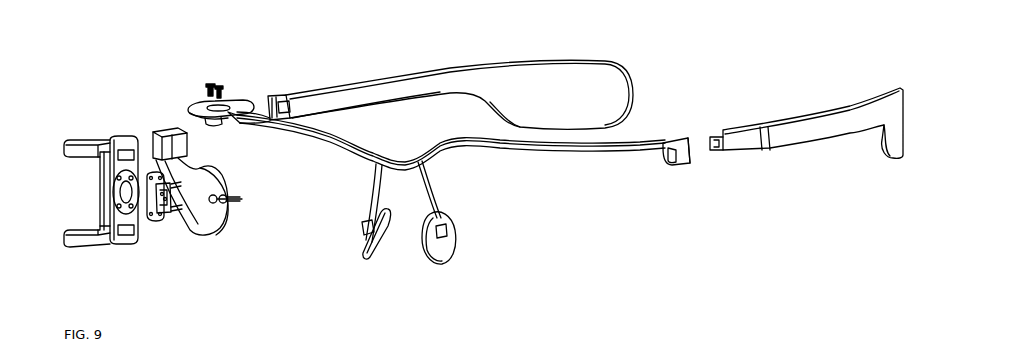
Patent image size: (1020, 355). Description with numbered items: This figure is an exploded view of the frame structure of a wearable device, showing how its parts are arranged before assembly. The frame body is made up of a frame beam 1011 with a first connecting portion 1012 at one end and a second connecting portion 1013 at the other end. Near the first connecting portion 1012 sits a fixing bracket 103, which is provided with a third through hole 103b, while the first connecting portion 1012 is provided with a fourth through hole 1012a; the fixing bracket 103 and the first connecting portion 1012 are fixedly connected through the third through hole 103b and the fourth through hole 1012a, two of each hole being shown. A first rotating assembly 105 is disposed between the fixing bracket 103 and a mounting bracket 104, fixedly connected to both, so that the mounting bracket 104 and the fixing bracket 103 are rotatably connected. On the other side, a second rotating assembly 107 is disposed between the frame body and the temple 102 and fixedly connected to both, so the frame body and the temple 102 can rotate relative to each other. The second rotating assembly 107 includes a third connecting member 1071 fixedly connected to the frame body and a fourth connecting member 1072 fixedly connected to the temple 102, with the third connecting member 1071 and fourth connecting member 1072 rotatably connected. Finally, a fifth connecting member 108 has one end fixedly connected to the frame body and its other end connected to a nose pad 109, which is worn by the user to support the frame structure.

The temple 102 is at (386, 89).
The fixing bracket 103 is at (210, 214).
The third through hole 103b is at (175, 133).
The mounting bracket 104 is at (117, 237).
The first rotating assembly 105 is at (147, 213).
The second rotating assembly 107 is at (313, 55).
The fifth connecting member 108 is at (437, 201).
The nose pad 109 is at (450, 247).
The frame beam 1011 is at (551, 150).
The first connecting portion 1012 is at (207, 90).
The fourth through hole 1012a is at (235, 71).
The second connecting portion 1013 is at (685, 164).
The third connecting member 1071 is at (241, 112).
The fourth connecting member 1072 is at (284, 100).